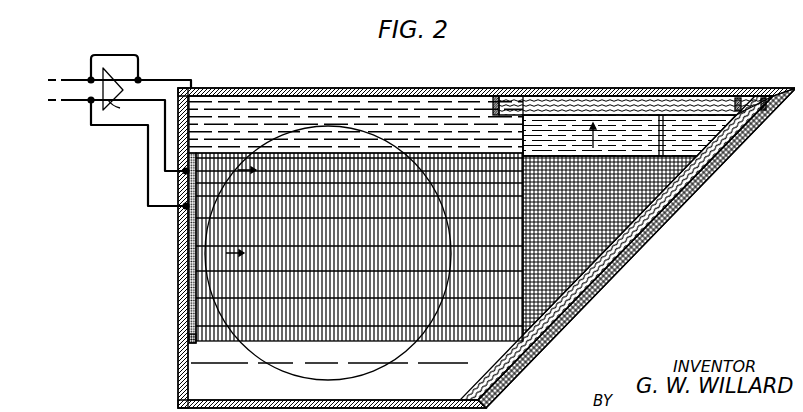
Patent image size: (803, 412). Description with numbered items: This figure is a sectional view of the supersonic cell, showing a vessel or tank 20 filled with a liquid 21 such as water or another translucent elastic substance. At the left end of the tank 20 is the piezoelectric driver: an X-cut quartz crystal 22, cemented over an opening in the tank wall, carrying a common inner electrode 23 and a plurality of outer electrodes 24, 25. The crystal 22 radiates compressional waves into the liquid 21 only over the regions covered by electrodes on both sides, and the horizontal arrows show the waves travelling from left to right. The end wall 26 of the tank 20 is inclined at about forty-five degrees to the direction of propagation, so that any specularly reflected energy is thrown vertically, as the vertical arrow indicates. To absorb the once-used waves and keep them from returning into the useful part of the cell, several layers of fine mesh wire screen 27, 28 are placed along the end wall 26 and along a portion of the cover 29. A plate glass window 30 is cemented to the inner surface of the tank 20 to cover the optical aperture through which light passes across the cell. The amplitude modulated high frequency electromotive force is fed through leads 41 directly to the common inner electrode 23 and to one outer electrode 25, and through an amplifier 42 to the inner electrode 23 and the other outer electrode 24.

The tank 20 is at (258, 88).
The liquid 21 is at (293, 108).
The X-cut quartz crystal 22 is at (185, 143).
The inner electrode 23 is at (188, 322).
The outer electrode 24 is at (178, 168).
The outer electrode 25 is at (180, 228).
The end wall 26 is at (612, 260).
The wire screen 27 is at (655, 207).
The wire screen 28 is at (615, 98).
The cover 29 is at (523, 86).
The plate glass window 30 is at (275, 312).
The leads 41 is at (70, 72).
The amplifier 42 is at (98, 73).